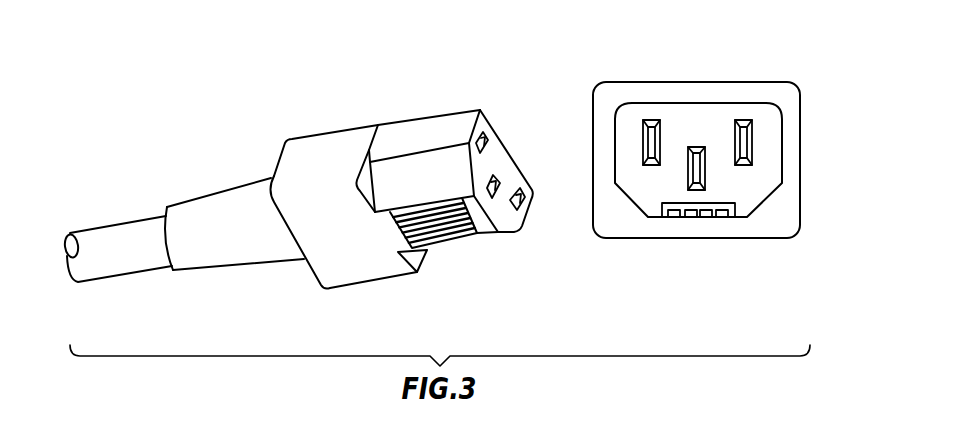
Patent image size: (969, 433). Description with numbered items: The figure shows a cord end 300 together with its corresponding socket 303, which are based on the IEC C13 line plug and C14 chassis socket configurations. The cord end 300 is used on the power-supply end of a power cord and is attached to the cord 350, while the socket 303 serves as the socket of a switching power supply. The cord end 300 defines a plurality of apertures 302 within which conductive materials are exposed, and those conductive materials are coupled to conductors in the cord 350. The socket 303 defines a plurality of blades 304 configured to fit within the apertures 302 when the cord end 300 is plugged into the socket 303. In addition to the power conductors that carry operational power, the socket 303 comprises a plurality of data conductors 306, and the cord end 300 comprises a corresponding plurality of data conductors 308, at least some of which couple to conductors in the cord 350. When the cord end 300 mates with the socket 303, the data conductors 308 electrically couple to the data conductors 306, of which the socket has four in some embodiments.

The cord end 300 is at (263, 100).
The apertures 302 is at (484, 132).
The socket 303 is at (778, 65).
The blades 304 is at (652, 120).
The data conductors 306 is at (744, 202).
The data conductors 308 is at (386, 243).
The cord 350 is at (127, 272).